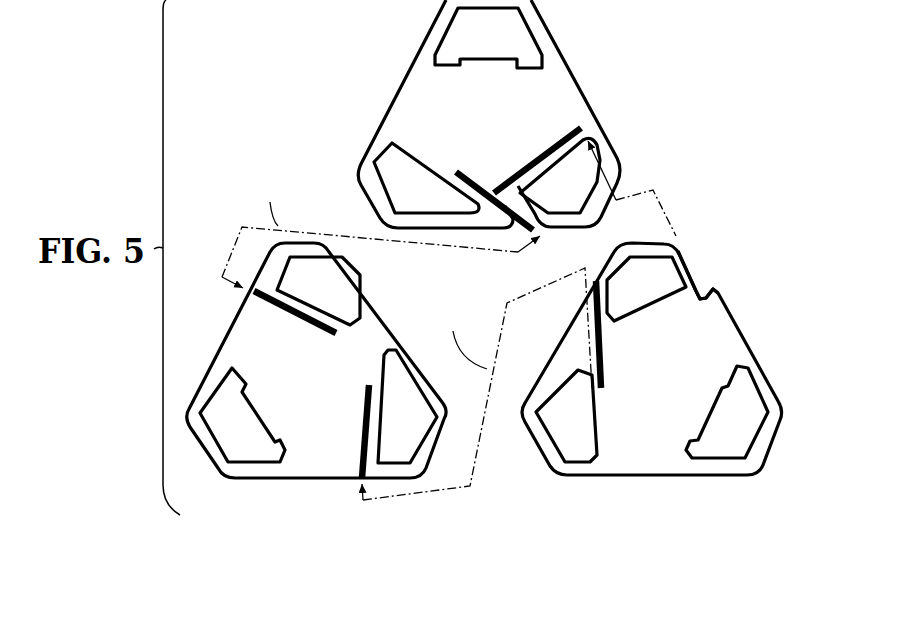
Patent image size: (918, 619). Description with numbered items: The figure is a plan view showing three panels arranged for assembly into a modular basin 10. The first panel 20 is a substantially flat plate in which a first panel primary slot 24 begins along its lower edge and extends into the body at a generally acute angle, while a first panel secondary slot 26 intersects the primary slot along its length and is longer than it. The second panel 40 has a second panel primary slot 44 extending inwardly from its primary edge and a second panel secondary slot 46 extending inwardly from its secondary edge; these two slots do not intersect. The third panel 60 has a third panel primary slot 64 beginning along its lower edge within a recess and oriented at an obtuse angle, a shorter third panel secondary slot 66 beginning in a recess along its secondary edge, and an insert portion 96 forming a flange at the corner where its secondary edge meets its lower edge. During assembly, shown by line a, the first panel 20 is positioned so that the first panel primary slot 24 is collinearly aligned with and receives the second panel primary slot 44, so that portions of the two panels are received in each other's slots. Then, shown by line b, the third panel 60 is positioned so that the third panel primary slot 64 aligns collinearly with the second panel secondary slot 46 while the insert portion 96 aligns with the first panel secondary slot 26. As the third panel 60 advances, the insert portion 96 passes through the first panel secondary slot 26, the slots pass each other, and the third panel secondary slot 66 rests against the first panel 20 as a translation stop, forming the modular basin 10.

The modular basin 10 is at (712, 130).
The first panel 20 is at (590, 68).
The first panel primary slot 24 is at (477, 170).
The first panel secondary slot 26 is at (538, 149).
The second panel 40 is at (208, 343).
The second panel primary slot 44 is at (311, 328).
The second panel secondary slot 46 is at (358, 420).
The third panel 60 is at (770, 344).
The third panel primary slot 64 is at (608, 367).
The third panel secondary slot 66 is at (710, 283).
The insert portion 96 is at (692, 253).